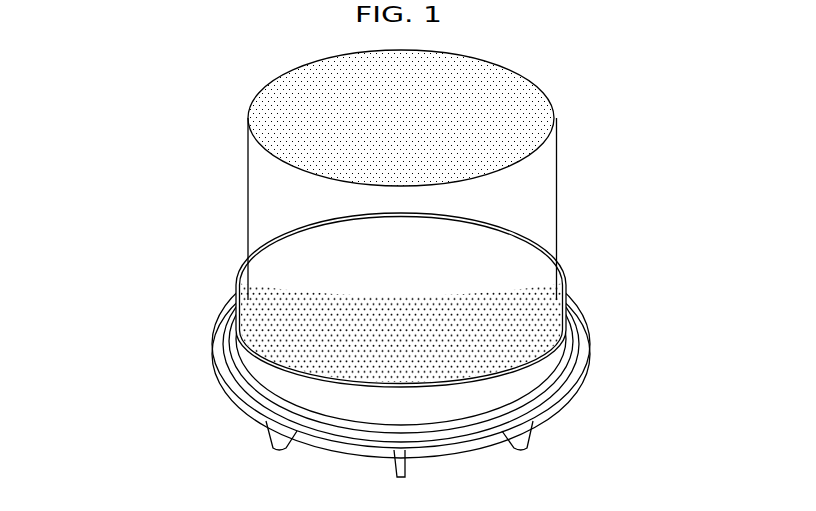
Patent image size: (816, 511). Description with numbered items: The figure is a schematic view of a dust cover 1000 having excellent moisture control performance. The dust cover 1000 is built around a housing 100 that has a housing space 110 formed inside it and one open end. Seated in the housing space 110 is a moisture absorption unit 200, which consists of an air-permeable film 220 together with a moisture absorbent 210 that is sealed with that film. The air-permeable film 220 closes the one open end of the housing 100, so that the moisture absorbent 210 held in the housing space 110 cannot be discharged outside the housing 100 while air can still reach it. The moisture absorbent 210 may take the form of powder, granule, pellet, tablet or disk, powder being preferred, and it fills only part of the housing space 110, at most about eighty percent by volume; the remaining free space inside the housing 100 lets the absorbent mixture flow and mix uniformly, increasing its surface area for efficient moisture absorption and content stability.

The dust cover 1000 is at (199, 292).
The housing 100 is at (567, 393).
The housing space 110 is at (429, 260).
The moisture absorption unit 200 is at (665, 148).
The moisture absorbent 210 is at (558, 282).
The air-permeable film 220 is at (555, 113).